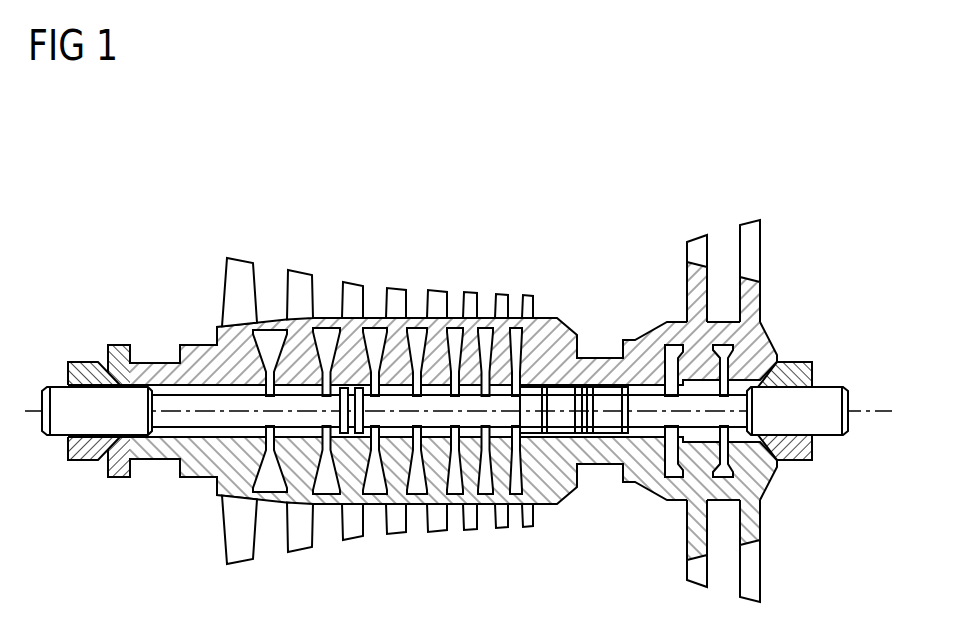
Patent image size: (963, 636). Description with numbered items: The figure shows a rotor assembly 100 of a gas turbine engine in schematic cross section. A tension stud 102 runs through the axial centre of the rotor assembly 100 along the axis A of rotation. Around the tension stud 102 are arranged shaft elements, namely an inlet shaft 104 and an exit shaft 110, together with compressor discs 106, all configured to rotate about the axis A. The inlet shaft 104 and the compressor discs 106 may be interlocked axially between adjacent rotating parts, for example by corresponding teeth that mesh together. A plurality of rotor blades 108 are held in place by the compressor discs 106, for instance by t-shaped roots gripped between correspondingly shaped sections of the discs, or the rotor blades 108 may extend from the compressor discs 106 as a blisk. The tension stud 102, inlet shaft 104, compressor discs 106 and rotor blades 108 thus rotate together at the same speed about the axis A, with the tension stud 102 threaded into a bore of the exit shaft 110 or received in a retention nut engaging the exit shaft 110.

The rotor assembly 100 is at (179, 169).
The tension stud 102 is at (175, 420).
The inlet shaft 104 is at (198, 345).
The compressor discs 106 is at (277, 320).
The rotor blades 108 is at (397, 282).
The exit shaft 110 is at (643, 488).
The axis of rotation A is at (880, 410).